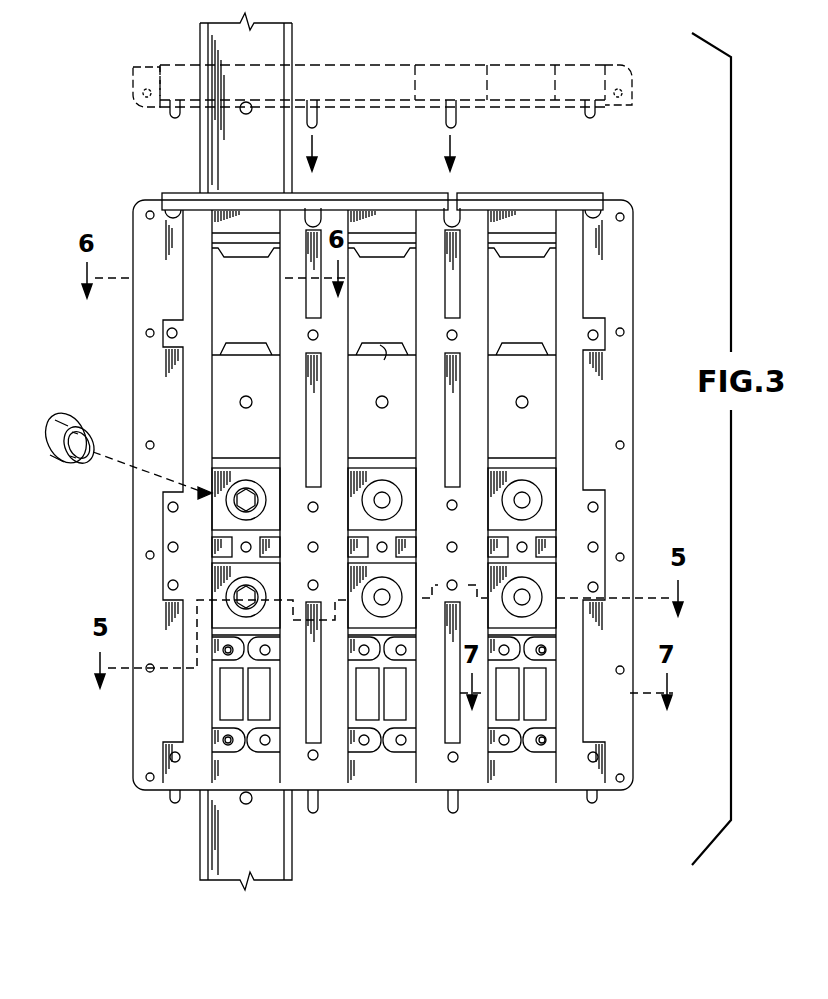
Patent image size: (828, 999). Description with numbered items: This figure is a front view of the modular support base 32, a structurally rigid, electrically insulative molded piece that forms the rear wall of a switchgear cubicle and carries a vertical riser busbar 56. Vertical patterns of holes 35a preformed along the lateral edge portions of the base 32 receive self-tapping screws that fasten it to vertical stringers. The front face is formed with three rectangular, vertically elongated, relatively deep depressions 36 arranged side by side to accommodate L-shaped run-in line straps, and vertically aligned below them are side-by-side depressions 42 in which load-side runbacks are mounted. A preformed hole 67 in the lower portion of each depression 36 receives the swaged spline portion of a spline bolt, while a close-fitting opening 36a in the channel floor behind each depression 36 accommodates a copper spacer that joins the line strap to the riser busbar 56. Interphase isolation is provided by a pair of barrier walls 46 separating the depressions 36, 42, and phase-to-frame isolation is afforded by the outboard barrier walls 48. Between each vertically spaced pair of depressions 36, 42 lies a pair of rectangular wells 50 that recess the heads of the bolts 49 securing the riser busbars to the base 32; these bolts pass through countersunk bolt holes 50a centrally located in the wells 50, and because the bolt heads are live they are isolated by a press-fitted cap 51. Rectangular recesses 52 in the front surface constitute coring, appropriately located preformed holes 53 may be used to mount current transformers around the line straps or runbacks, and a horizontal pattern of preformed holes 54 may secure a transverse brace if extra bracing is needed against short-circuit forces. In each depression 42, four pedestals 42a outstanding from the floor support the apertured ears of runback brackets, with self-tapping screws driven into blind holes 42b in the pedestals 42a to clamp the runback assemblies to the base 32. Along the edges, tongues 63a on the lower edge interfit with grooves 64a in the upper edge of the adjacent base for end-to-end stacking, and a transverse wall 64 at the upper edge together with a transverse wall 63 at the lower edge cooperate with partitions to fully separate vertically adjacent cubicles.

The modular support base 32 is at (628, 243).
The holes 35a is at (624, 446).
The depressions 36 is at (556, 293).
The opening 36a is at (382, 347).
The depressions 42 is at (280, 770).
The pedestals 42a is at (226, 736).
The blind holes 42b is at (545, 738).
The barrier walls 46 is at (422, 446).
The outboard barrier walls 48 is at (190, 370).
The bolts 49 is at (246, 497).
The rectangular wells 50 is at (352, 490).
The bolt holes 50a is at (518, 504).
The cap 51 is at (62, 418).
The rectangular recesses 52 is at (320, 298).
The preformed holes 53 is at (168, 332).
The preformed holes 54 is at (168, 545).
The riser busbar 56 is at (256, 164).
The transverse wall 63 is at (485, 100).
The tongues 63a is at (170, 117).
The transverse wall 64 is at (400, 194).
The grooves 64a is at (315, 194).
The preformed hole 67 is at (245, 397).